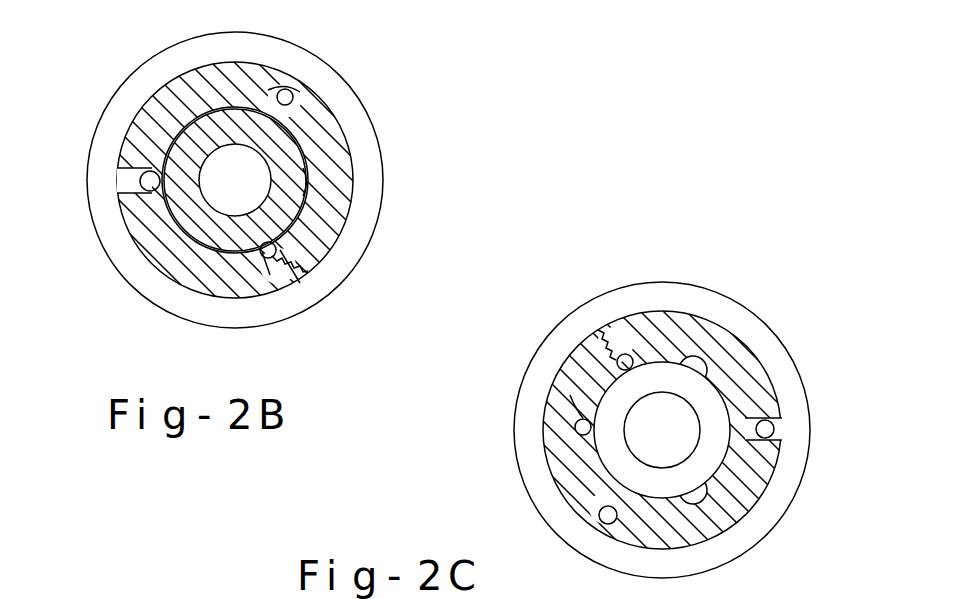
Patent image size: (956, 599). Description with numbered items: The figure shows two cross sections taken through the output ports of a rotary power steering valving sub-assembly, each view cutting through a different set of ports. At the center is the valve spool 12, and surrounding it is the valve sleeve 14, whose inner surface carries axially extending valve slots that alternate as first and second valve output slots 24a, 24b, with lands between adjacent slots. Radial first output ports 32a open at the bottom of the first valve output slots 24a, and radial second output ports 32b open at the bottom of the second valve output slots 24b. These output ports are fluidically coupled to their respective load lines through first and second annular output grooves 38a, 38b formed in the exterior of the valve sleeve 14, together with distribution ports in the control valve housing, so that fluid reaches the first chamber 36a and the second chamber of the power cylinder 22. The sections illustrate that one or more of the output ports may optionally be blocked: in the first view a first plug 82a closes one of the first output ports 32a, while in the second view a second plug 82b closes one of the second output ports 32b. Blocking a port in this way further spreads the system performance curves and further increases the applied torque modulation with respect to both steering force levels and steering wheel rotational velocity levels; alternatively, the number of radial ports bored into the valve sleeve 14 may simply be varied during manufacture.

In FIG. 2B, the valve spool 12 is at (188, 147).
In FIG. 2C, the valve spool 12 is at (710, 463).
In FIG. 2B, the valve sleeve 14 is at (261, 78).
In FIG. 2C, the valve sleeve 14 is at (718, 346).
In FIG. 2B, the power cylinder 22 is at (586, 14).
In FIG. 2B, the first valve output slot 24a is at (270, 118).
In FIG. 2C, the first valve output slot 24a is at (560, 395).
In FIG. 2B, the second valve output slot 24b is at (306, 199).
In FIG. 2C, the second valve output slot 24b is at (637, 350).
In FIG. 2B, the first output port 32a is at (288, 90).
In FIG. 2C, the second output port 32b is at (603, 322).
In FIG. 2B, the first chamber 36a is at (698, 10).
In FIG. 2B, the first annular output groove 38a is at (164, 64).
In FIG. 2C, the second annular output groove 38b is at (730, 548).
In FIG. 2B, the first plug 82a is at (298, 266).
In FIG. 2C, the second plug 82b is at (598, 350).